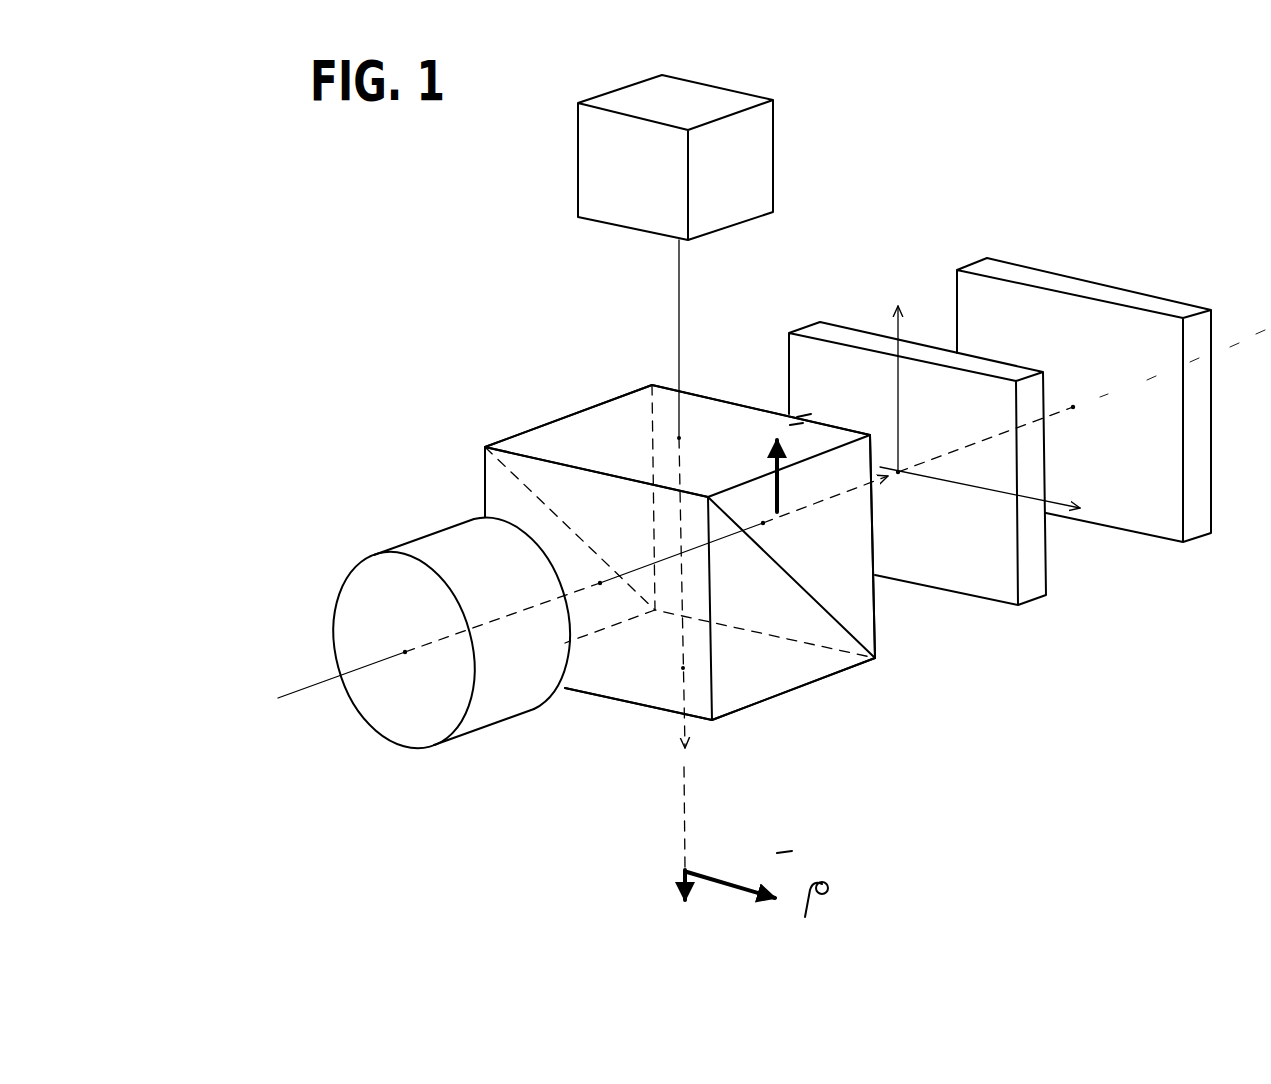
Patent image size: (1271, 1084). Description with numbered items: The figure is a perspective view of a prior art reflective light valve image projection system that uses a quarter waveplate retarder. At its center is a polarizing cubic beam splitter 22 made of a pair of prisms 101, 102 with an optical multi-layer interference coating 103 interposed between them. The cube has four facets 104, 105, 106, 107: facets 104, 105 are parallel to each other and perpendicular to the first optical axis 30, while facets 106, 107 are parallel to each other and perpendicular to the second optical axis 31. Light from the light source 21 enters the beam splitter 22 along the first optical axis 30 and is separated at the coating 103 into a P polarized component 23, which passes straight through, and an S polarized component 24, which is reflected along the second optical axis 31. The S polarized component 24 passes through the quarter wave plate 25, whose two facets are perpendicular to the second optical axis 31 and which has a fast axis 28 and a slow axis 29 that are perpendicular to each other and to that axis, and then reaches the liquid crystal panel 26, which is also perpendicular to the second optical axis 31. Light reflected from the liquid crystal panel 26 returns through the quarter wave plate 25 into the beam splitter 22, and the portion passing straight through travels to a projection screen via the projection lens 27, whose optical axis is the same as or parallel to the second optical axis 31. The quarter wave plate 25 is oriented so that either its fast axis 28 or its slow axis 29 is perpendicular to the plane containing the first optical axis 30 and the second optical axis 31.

The light source 21 is at (768, 152).
The polarizing cubic beam splitter 22 is at (550, 427).
The P polarized component 23 is at (680, 730).
The S polarized component 24 is at (890, 473).
The quarter wave plate 25 is at (813, 328).
The liquid crystal panel 26 is at (980, 263).
The projection lens 27 is at (425, 543).
The fast axis 28 is at (1062, 512).
The slow axis 29 is at (895, 328).
The first optical axis 30 is at (687, 323).
The second optical axis 31 is at (830, 502).
The prism 101 is at (655, 380).
The prism 102 is at (718, 728).
The optical multi-layer interference coating 103 is at (533, 487).
The facet 104 is at (618, 412).
The facet 105 is at (820, 665).
The facet 106 is at (498, 475).
The facet 107 is at (855, 595).